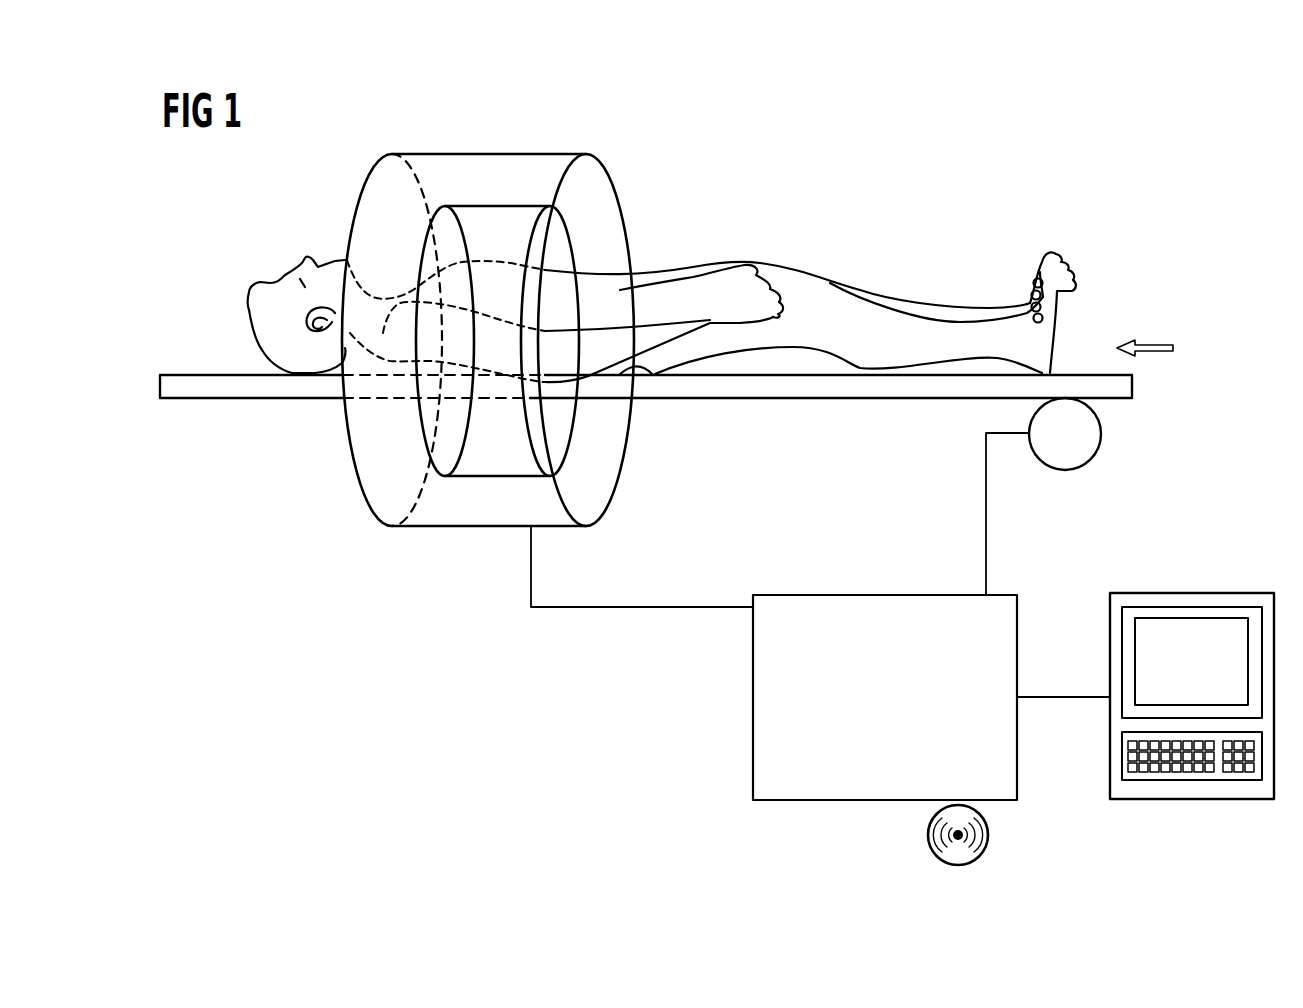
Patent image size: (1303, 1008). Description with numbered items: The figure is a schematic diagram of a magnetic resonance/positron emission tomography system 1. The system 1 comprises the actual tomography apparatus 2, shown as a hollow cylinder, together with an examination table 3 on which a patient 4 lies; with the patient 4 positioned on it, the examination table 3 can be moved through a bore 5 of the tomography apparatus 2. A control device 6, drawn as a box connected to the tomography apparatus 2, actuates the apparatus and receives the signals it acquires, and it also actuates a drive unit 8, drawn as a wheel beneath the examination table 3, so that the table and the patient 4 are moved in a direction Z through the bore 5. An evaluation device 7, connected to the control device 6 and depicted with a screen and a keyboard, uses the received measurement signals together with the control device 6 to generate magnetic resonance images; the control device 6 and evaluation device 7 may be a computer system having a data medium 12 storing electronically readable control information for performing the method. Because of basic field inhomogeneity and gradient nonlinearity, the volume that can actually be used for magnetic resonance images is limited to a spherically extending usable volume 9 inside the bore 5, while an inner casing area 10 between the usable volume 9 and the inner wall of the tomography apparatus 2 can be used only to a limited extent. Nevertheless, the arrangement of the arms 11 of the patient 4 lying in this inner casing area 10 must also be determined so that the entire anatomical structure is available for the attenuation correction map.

The magnetic resonance/positron emission tomography system 1 is at (821, 187).
The tomography apparatus 2 is at (431, 154).
The examination table 3 is at (1132, 386).
The patient 4 is at (1070, 262).
The bore 5 is at (602, 178).
The control device 6 is at (871, 595).
The evaluation device 7 is at (1190, 593).
The drive unit 8 is at (1102, 432).
The usable volume 9 is at (562, 218).
The inner casing area 10 is at (535, 167).
The arms 11 is at (697, 310).
The data medium 12 is at (988, 838).